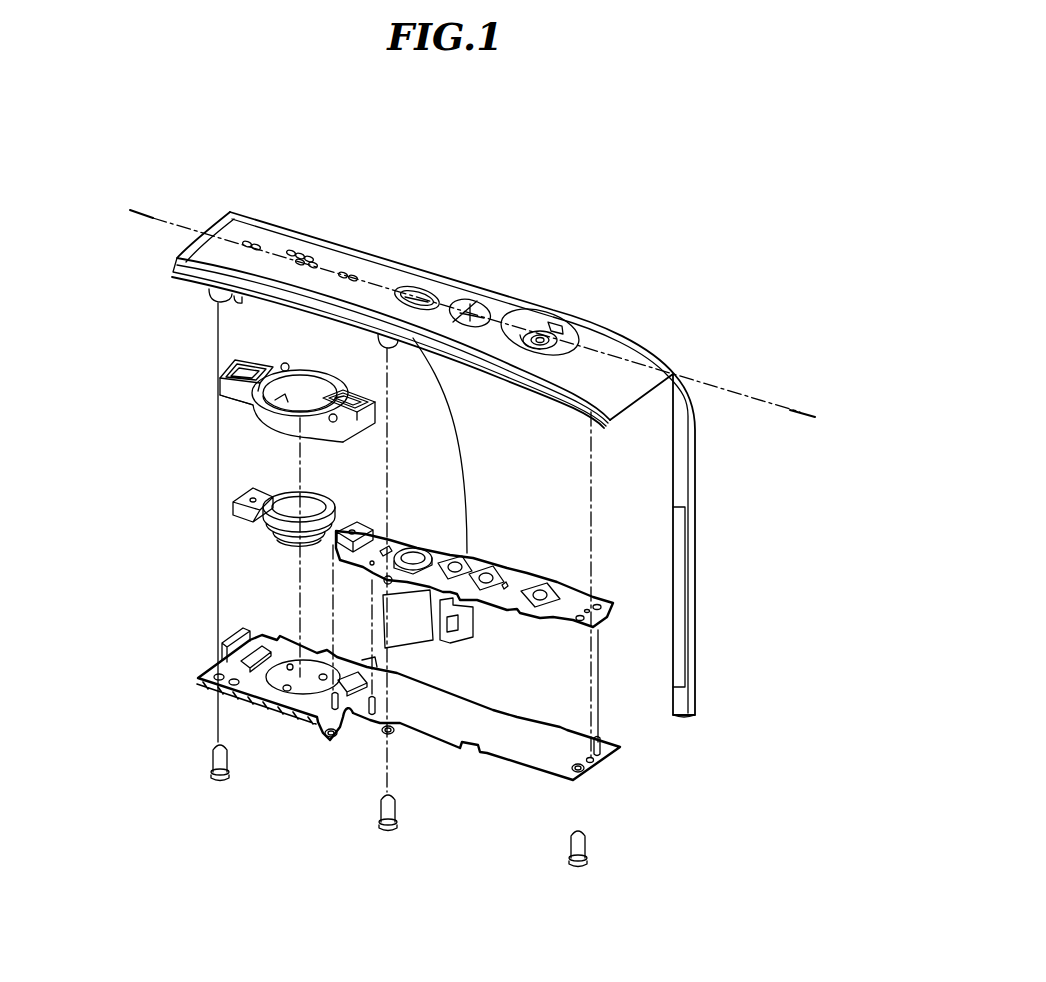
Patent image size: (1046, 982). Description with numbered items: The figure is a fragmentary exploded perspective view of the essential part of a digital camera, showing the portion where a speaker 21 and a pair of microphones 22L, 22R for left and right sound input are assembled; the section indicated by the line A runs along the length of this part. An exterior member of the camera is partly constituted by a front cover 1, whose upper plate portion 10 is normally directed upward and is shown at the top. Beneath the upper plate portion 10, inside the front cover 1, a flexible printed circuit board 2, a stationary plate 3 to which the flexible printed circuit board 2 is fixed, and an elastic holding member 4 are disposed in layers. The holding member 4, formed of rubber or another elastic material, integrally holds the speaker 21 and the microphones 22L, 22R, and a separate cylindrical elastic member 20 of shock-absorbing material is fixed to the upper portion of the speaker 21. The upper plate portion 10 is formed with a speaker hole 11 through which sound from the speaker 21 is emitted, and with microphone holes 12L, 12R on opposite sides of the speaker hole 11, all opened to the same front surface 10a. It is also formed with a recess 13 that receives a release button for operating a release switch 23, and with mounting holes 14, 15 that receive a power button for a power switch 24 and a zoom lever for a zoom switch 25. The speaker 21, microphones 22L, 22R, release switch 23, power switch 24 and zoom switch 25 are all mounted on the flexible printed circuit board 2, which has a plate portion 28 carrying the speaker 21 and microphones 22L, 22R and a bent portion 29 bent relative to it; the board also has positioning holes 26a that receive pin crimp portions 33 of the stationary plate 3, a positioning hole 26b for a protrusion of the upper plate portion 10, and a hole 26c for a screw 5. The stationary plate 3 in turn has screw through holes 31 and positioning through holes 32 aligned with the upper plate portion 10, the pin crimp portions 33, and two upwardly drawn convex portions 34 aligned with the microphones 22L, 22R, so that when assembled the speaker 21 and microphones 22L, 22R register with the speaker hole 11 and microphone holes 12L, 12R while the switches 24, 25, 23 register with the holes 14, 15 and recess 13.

The front cover 1 is at (424, 425).
The flexible printed circuit board (FPC) 2 is at (469, 544).
The stationary plate 3 is at (389, 715).
The holding member 4 is at (218, 393).
The screw 5 is at (222, 776).
The upper plate portion 10 is at (190, 237).
The front surface 10a is at (390, 273).
The speaker hole 11 is at (300, 257).
The microphone hole 12L is at (247, 243).
The microphone hole 12R is at (347, 272).
The recess 13 is at (565, 314).
The mounting hole 14 is at (417, 290).
The mounting hole 15 is at (473, 307).
The cylindrical elastic member 20 is at (412, 549).
The speaker 21 is at (283, 506).
The microphone 22L is at (246, 499).
The microphone 22R is at (336, 537).
The release switch 23 is at (562, 584).
The power switch 24 is at (467, 482).
The zoom switch 25 is at (487, 575).
The positioning hole 26a is at (623, 610).
The positioning hole 26b is at (607, 621).
The hole 26c is at (598, 628).
The plate portion 28 is at (451, 554).
The bent portion 29 is at (478, 607).
The screw through hole 31 is at (215, 675).
The positioning through hole 32 is at (402, 723).
The pin crimp portion 33 is at (371, 718).
The drawn convex portion 34 is at (247, 657).
The section line A- A is at (113, 238).